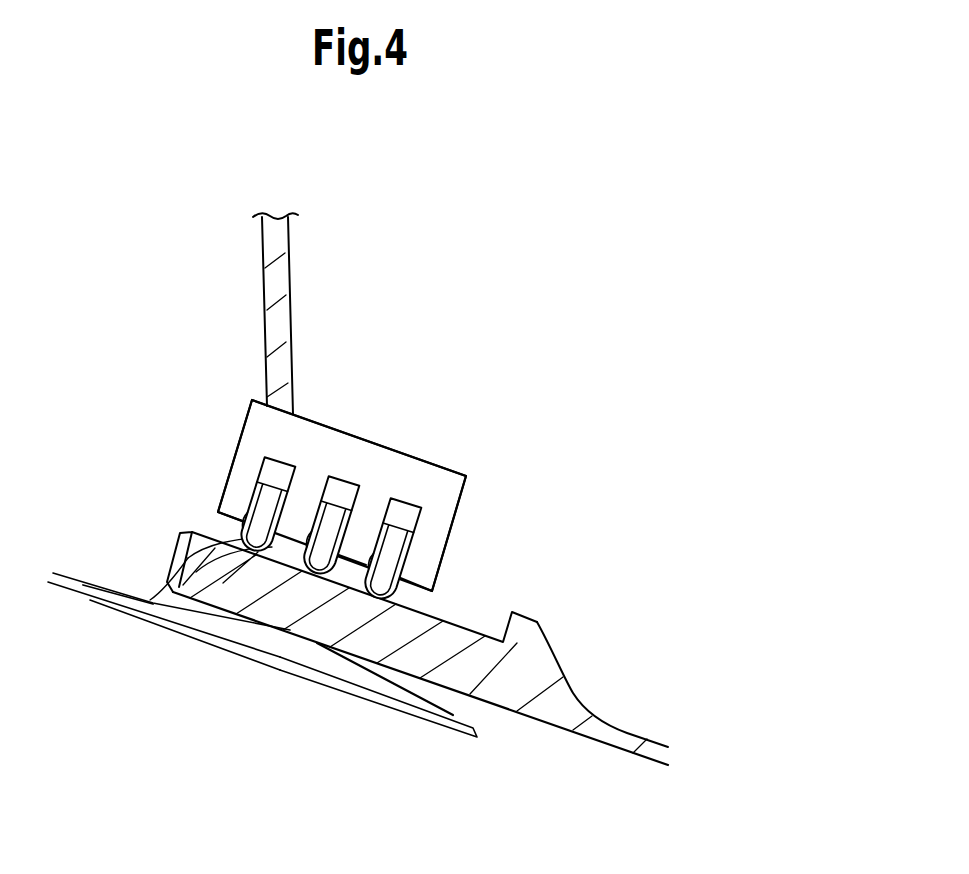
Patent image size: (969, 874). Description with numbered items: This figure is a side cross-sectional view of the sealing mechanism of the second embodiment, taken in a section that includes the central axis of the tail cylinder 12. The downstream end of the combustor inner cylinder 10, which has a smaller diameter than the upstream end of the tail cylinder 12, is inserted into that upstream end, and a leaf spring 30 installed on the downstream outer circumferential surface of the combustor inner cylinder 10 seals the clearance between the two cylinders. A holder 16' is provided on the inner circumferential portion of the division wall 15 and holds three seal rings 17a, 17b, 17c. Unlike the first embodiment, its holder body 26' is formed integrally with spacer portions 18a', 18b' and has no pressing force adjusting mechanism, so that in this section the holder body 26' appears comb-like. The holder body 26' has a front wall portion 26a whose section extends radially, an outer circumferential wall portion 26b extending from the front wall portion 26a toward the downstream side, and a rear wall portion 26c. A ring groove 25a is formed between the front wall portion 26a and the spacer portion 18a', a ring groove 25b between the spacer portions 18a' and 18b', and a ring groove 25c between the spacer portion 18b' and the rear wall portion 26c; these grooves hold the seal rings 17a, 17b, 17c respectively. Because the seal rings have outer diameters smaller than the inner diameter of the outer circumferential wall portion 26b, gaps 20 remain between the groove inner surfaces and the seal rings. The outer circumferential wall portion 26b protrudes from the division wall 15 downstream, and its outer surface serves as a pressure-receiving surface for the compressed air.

The division wall 15 is at (290, 271).
The combustor inner cylinder 10 is at (83, 600).
The tail cylinder 12 is at (618, 750).
The ring groove 25a is at (172, 594).
The ring groove 25b is at (265, 607).
The ring groove 25c is at (415, 586).
The spacer portion 18a' is at (216, 622).
The spacer portion 18b' is at (376, 678).
The leaf spring 30 is at (148, 600).
The holder 16' is at (348, 483).
The holder body 26' is at (342, 479).
The front wall portion 26a is at (270, 458).
The outer circumferential wall portion 26b is at (318, 424).
The rear wall portion 26c is at (440, 579).
The seal ring 17a is at (262, 490).
The seal ring 17b is at (410, 512).
The seal ring 17c is at (400, 555).
The gap 20 is at (243, 434).